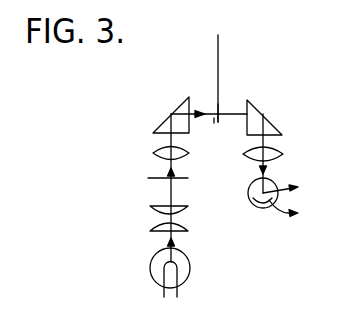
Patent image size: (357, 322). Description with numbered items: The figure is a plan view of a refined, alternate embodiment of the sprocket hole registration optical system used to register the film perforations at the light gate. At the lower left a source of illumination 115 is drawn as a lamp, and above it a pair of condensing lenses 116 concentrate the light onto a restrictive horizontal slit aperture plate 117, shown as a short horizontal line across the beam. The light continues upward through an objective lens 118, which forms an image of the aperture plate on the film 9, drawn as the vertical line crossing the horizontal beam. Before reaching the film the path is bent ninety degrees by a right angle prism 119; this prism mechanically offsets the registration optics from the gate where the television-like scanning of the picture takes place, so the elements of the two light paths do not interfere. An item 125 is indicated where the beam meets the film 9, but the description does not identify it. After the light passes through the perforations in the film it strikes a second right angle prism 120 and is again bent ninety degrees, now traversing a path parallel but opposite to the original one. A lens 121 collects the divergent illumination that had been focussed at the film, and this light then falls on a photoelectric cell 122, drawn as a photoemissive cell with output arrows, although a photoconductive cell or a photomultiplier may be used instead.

The film 9 is at (218, 47).
The beam crossing element 125 is at (212, 107).
The right angle prism 119 is at (167, 119).
The second right angle prism 120 is at (266, 119).
The objective lens 118 is at (154, 151).
The lens 121 is at (288, 148).
The restrictive horizontal slit aperture plate 117 is at (149, 178).
The condensing lenses 116 is at (149, 212).
The source of illumination 115 is at (150, 266).
The photoelectric cell 122 is at (258, 208).